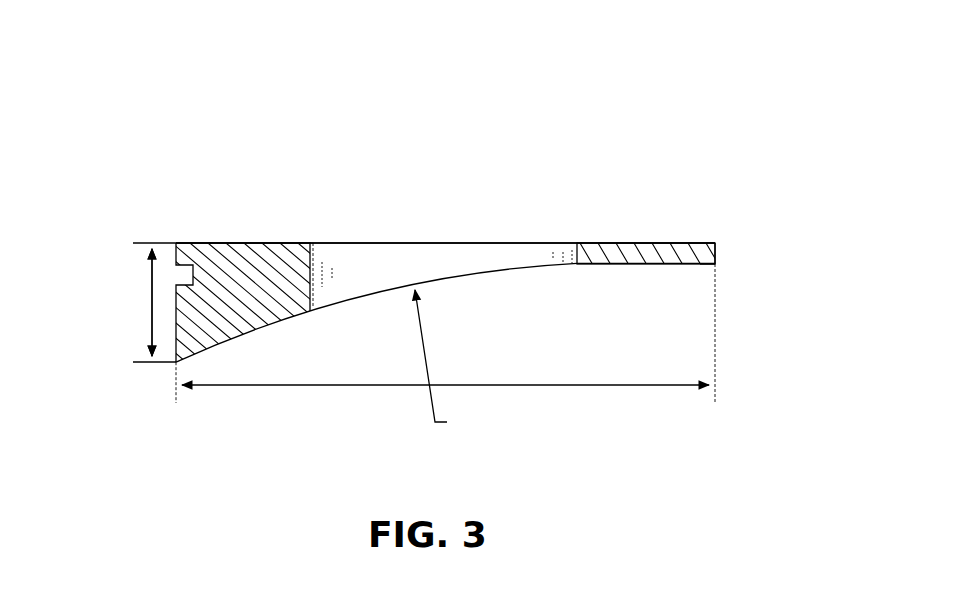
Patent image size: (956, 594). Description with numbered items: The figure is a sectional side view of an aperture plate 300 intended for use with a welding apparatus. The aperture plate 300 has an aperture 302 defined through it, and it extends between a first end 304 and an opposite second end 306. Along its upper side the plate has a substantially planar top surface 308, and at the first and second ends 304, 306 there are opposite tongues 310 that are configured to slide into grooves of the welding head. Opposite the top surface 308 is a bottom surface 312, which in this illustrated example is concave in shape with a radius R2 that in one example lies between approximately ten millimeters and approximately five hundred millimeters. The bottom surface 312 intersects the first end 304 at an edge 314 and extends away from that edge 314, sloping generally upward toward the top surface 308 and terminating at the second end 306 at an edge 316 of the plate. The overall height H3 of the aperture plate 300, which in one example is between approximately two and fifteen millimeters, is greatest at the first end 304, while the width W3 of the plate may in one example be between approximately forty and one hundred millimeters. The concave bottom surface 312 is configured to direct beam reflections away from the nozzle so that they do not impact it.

The aperture plate 300 is at (611, 108).
The aperture 302 is at (466, 260).
The first end 304 is at (111, 323).
The second end 306 is at (763, 257).
The top surface 308 is at (655, 243).
The tongues 310 is at (176, 236).
The bottom surface 312 is at (318, 311).
The edge 314 is at (176, 362).
The edge 316 is at (717, 265).
The overall height H3 is at (151, 293).
The radius R2 is at (445, 366).
The width W3 is at (585, 385).